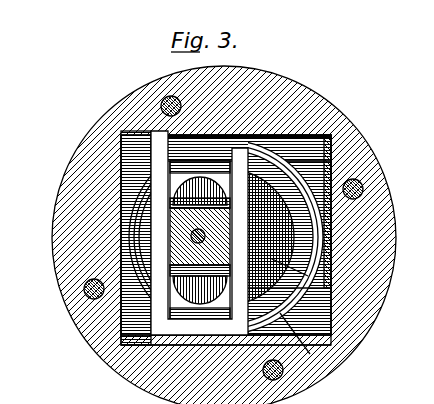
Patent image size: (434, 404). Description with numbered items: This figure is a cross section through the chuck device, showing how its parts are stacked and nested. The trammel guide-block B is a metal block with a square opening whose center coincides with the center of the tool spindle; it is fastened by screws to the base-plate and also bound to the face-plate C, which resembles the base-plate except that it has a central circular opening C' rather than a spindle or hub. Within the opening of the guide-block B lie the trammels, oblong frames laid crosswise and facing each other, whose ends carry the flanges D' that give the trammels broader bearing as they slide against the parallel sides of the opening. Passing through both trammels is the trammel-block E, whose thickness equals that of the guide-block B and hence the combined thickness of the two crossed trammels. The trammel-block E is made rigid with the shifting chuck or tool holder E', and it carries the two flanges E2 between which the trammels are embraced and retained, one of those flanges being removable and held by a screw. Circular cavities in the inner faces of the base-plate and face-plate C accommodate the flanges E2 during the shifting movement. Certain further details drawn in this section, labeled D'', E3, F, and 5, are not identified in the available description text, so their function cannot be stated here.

The face-plate C is at (226, 240).
The circular opening C' is at (305, 248).
The trammel guide-block B is at (247, 237).
The flange D' is at (210, 241).
The casing side wall D'' is at (344, 211).
The trammel-block E is at (200, 236).
The flange E2 is at (126, 340).
The inner disc E3 is at (233, 237).
The shifting chuck or tool holder E' is at (303, 312).
The channel F is at (165, 320).
The ring bottom 5 is at (298, 340).